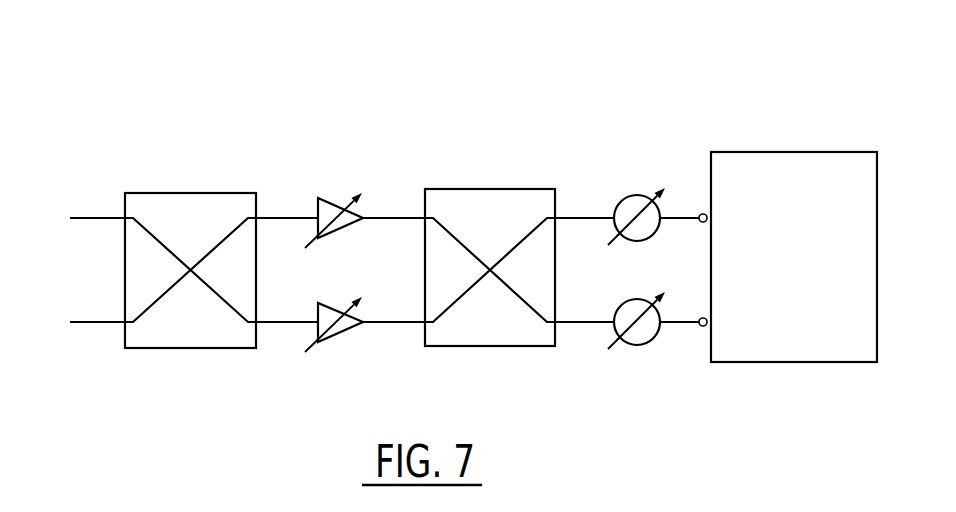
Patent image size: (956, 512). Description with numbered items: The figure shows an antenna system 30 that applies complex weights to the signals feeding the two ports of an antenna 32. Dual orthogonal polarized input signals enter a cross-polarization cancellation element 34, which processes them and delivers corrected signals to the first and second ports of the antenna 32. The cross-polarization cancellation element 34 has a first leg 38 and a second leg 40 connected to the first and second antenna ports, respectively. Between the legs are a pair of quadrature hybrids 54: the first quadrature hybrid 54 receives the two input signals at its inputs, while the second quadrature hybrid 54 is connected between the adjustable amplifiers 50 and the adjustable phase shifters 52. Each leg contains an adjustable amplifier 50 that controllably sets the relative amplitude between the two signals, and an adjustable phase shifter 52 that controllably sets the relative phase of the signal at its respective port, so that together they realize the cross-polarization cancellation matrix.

The antenna system 30 is at (494, 52).
The antenna 32 is at (770, 163).
The cross-polarization cancellation element 34 is at (698, 124).
The first leg 38 is at (590, 218).
The second leg 40 is at (582, 322).
The adjustable amplifier 50 is at (360, 222).
The adjustable phase shifter 52 is at (640, 241).
The quadrature hybrid 54 is at (203, 348).